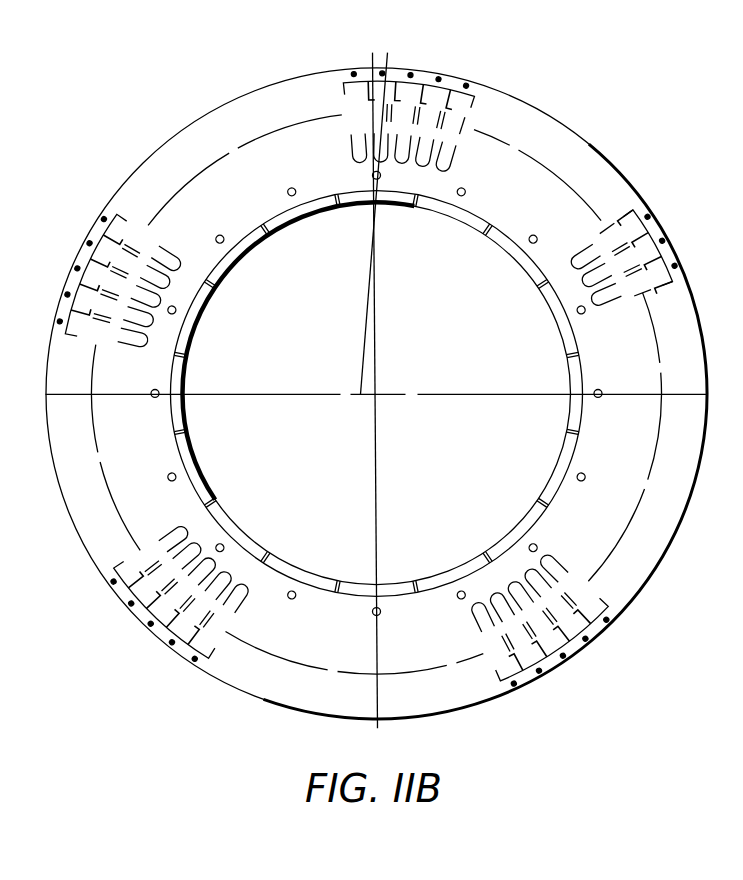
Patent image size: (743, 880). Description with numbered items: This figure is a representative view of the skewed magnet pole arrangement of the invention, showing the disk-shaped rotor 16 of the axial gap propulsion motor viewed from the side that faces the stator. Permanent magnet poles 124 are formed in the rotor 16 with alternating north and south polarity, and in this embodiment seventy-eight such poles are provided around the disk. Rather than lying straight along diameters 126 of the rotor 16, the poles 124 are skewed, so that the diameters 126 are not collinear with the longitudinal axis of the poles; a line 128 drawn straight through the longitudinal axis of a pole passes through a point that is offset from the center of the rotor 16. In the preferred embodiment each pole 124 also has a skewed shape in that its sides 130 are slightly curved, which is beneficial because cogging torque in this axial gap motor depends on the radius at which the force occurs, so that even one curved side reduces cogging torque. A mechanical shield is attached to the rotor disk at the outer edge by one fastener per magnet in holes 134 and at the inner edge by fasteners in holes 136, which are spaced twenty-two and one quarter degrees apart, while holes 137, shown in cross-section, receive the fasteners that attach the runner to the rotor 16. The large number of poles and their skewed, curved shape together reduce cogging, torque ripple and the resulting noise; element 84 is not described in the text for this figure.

The rotor 16 is at (258, 72).
The housing 84 is at (158, 149).
The rotor magnets 124 is at (114, 213).
The diameters 126 is at (437, 394).
The line 128 is at (363, 351).
The sides 130 is at (358, 106).
The holes 134 is at (460, 84).
The holes 136 is at (221, 239).
The holes 137 is at (210, 500).